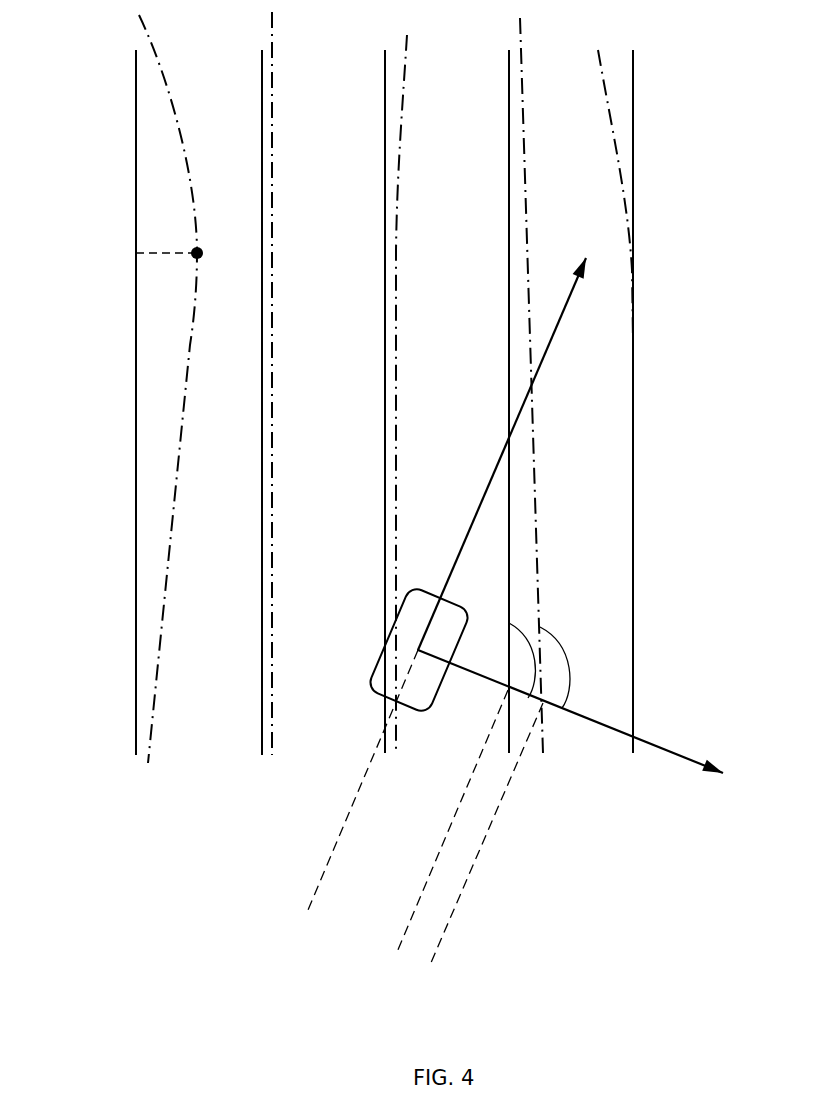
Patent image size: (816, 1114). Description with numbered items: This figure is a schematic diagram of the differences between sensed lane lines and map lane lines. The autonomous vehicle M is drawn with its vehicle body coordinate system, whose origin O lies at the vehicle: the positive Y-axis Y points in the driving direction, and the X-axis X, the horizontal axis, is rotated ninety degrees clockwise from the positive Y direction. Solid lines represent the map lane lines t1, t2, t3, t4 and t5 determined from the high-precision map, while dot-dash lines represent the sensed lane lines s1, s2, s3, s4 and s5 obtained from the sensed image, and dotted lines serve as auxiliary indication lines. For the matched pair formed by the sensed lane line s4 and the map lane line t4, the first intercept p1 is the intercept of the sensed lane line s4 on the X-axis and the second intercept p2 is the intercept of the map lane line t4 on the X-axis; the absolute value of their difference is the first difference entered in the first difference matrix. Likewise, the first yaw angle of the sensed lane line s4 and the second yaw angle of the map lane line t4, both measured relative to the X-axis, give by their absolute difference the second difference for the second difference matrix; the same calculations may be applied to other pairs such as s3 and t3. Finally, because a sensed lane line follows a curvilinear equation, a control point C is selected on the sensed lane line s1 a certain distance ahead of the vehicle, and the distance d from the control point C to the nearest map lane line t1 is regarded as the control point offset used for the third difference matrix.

The sensed lane line s1 is at (168, 385).
The sensed lane line s2 is at (286, 381).
The sensed lane line s3 is at (413, 380).
The sensed lane line s4 is at (534, 380).
The sensed lane line s5 is at (616, 174).
The map lane line t1 is at (137, 420).
The map lane line t2 is at (264, 420).
The map lane line t3 is at (387, 420).
The map lane line t4 is at (509, 420).
The map lane line t5 is at (632, 420).
The control point C is at (209, 255).
The control point offset d is at (165, 262).
The autonomous vehicle M is at (370, 690).
The origin of vehicle body coordinate system O is at (407, 650).
The X-axis X is at (580, 721).
The Y-axis Y is at (509, 441).
The first intercept p1 is at (445, 930).
The second intercept p2 is at (435, 863).